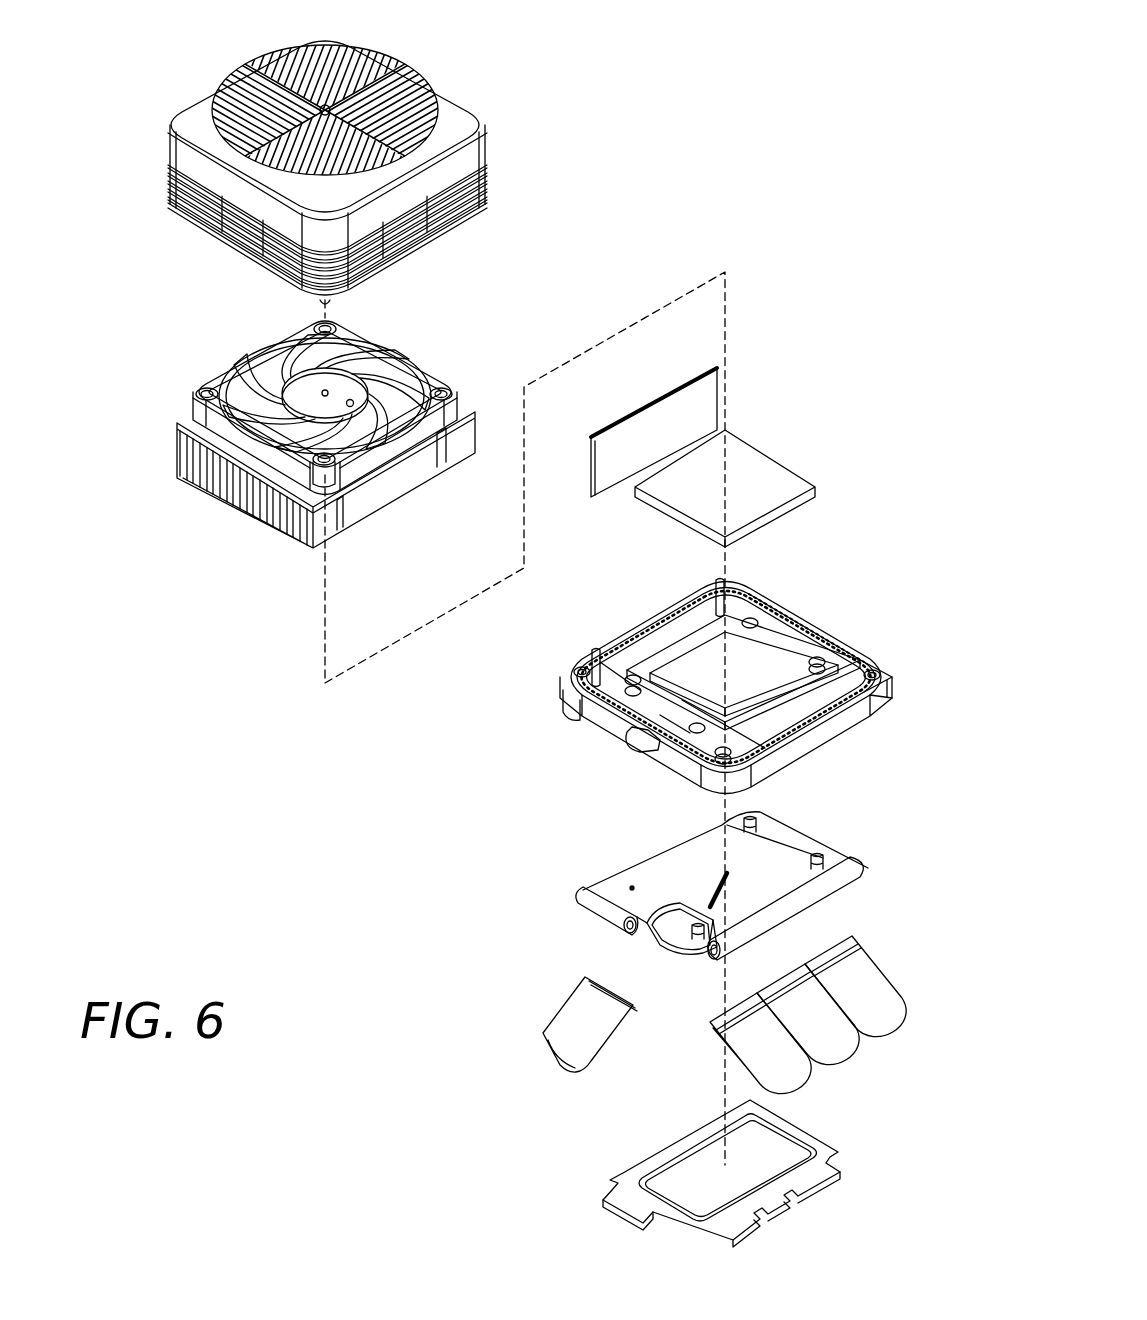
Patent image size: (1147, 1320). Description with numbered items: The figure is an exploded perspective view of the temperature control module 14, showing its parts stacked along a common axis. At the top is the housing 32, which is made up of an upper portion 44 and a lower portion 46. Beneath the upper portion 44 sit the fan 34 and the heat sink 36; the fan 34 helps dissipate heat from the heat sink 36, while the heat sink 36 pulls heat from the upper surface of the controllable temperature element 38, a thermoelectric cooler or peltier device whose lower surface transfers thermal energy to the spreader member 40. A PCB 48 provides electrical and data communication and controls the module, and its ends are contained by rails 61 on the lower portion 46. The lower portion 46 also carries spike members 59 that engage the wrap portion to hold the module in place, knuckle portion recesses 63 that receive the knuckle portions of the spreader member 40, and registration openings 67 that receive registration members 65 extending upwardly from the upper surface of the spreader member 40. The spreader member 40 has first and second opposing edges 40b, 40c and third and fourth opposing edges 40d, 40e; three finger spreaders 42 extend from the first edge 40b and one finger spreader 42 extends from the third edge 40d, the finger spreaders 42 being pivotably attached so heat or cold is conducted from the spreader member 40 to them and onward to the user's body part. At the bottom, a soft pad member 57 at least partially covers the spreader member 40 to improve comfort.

The temperature control module 14 is at (190, 45).
The upper portion 44 is at (200, 165).
The fan 34 is at (395, 370).
The heat sink 36 is at (218, 483).
The PCB 48 is at (612, 440).
The controllable temperature element 38 is at (800, 482).
The lower portion 46 is at (797, 640).
The rails 61 is at (690, 600).
The spike members 59 is at (798, 645).
The registration openings 67 is at (840, 650).
The housing 32 is at (885, 693).
The knuckle portion recesses 63 is at (605, 715).
The spreader member 40 is at (865, 815).
The fourth edge 40e is at (768, 810).
The registration members 65 is at (822, 848).
The first edge 40b is at (855, 892).
The second edge 40c is at (660, 855).
The third edge 40d is at (673, 953).
The finger spreaders 42 is at (555, 1040).
The pad member 57 is at (625, 1170).